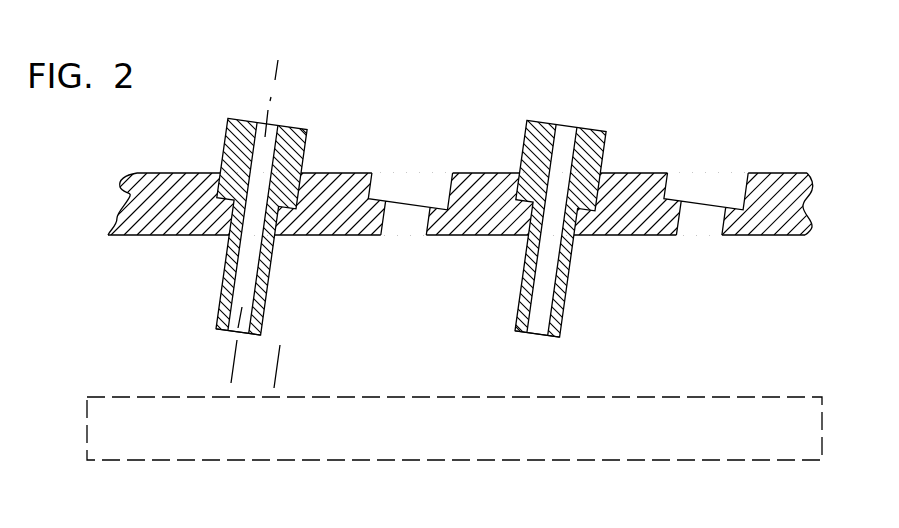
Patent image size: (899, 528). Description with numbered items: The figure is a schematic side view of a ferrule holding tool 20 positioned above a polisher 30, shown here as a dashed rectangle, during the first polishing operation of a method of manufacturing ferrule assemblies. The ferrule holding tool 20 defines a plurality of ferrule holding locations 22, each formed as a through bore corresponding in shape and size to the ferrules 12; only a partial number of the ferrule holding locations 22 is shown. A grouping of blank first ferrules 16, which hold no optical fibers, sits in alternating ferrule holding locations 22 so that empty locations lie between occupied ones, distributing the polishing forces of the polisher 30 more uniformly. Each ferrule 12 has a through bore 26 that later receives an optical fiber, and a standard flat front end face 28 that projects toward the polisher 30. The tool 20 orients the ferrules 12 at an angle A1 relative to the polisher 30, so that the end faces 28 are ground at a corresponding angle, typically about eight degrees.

The ferrule 12 is at (237, 120).
The first ferrule 16 is at (294, 101).
The ferrule holding tool 20 is at (787, 172).
The ferrule holding location 22 is at (218, 172).
The through bore 26 is at (240, 264).
The front end face 28 is at (252, 340).
The polisher 30 is at (705, 397).
The angle A1 is at (330, 357).